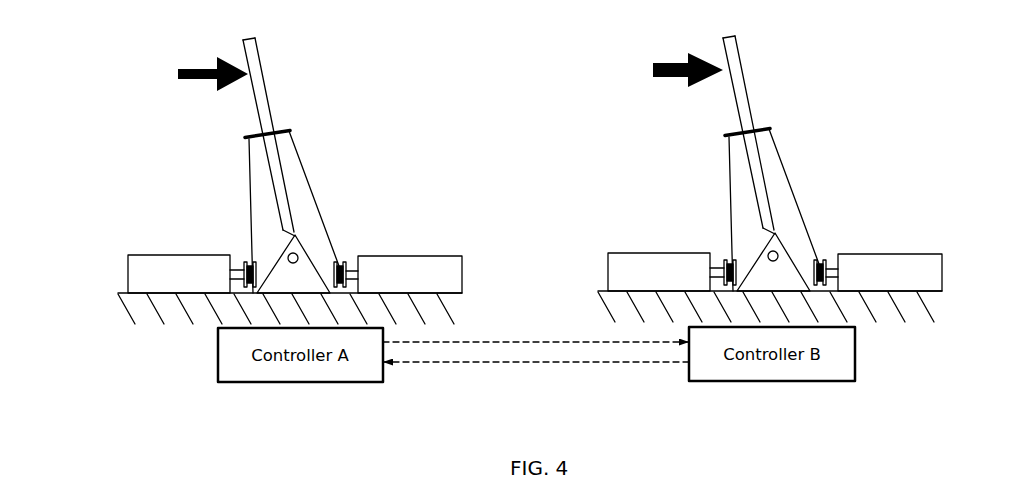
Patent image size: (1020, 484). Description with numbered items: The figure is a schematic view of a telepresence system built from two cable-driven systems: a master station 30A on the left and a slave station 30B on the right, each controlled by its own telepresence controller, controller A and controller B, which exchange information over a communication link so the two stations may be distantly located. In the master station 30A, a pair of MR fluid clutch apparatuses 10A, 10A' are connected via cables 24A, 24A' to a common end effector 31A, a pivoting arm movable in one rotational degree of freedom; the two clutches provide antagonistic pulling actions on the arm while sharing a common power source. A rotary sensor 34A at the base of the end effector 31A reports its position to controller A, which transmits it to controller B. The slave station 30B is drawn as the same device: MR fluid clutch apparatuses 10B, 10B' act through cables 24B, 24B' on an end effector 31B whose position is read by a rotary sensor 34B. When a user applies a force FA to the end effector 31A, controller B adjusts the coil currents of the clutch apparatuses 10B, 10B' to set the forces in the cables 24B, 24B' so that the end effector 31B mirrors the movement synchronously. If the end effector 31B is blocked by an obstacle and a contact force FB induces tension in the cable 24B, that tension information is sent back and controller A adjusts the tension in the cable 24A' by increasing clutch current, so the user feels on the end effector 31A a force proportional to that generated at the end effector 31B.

The master station 30A is at (122, 65).
The end effector 31A is at (270, 93).
The cable 24A is at (210, 216).
The cable 24A' is at (334, 209).
The MR fluid clutch apparatus 10A is at (145, 255).
The MR fluid clutch apparatus 10A' is at (404, 255).
The rotary sensor 34A is at (290, 262).
The slave station 30B is at (674, 77).
The end effector 31B is at (765, 130).
The cable 24B is at (695, 214).
The cable 24B' is at (818, 207).
The MR fluid clutch apparatus 10B is at (647, 257).
The MR fluid clutch apparatus 10B' is at (884, 255).
The rotary sensor 34B is at (844, 305).